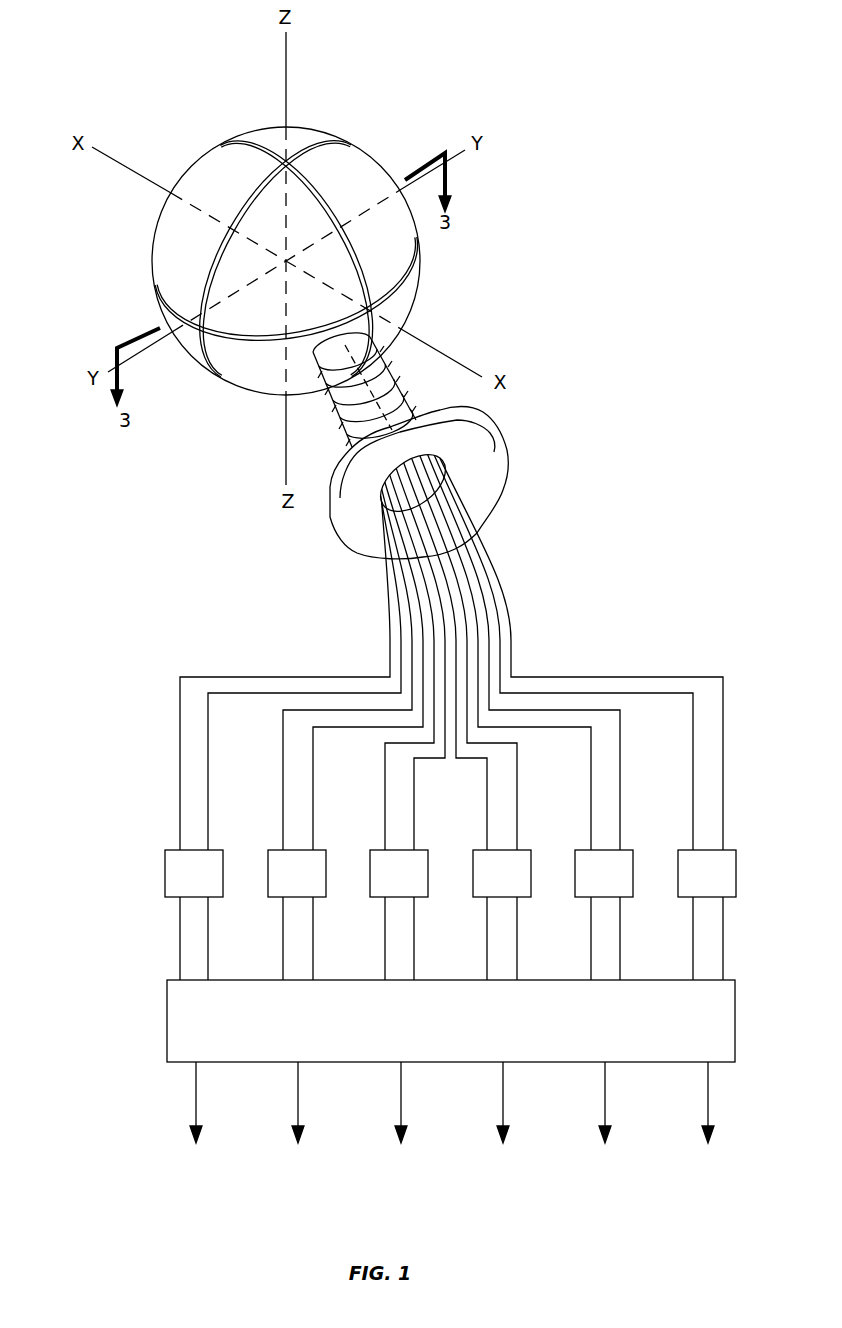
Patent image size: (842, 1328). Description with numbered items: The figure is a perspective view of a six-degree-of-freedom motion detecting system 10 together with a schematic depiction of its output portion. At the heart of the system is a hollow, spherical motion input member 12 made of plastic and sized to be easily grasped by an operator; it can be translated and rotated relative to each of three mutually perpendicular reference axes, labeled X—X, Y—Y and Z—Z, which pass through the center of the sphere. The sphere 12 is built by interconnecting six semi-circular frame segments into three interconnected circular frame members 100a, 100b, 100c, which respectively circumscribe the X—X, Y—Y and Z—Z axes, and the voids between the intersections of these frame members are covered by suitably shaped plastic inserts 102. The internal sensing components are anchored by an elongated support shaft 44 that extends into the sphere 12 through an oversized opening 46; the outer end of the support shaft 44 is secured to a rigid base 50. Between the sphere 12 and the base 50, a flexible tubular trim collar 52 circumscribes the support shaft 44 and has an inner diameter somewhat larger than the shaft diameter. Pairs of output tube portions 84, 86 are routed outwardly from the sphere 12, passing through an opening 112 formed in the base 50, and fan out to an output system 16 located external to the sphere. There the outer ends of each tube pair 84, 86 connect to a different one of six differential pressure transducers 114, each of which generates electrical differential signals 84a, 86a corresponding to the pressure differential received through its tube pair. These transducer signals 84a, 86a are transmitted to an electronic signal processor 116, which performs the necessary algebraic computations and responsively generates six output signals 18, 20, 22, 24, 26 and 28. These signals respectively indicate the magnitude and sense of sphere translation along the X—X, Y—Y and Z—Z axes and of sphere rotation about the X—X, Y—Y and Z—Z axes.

The six-degree-of-freedom motion detecting system 10 is at (492, 211).
The spherical motion input member 12 is at (365, 138).
The output system 16 is at (100, 895).
The output signal 18 is at (196, 1107).
The output signal 20 is at (298, 1107).
The output signal 22 is at (401, 1107).
The output signal 24 is at (503, 1107).
The output signal 26 is at (605, 1107).
The output signal 28 is at (708, 1107).
The support shaft 44 is at (396, 386).
The oversized opening 46 is at (332, 344).
The rigid base 50 is at (485, 408).
The flexible tubular trim collar 52 is at (382, 370).
The output tube portion 84 is at (178, 757).
The output tube portion 86 is at (208, 757).
The electrical differential signal 84a is at (180, 932).
The electrical differential signal 86a is at (208, 970).
The circular frame member 100a is at (222, 250).
The circular frame member 100b is at (248, 142).
The circular frame member 100c is at (162, 300).
The plastic inserts 102 is at (300, 136).
The opening 112 is at (416, 468).
The differential pressure transducer 114 is at (214, 852).
The electronic signal processor 116 is at (167, 1020).